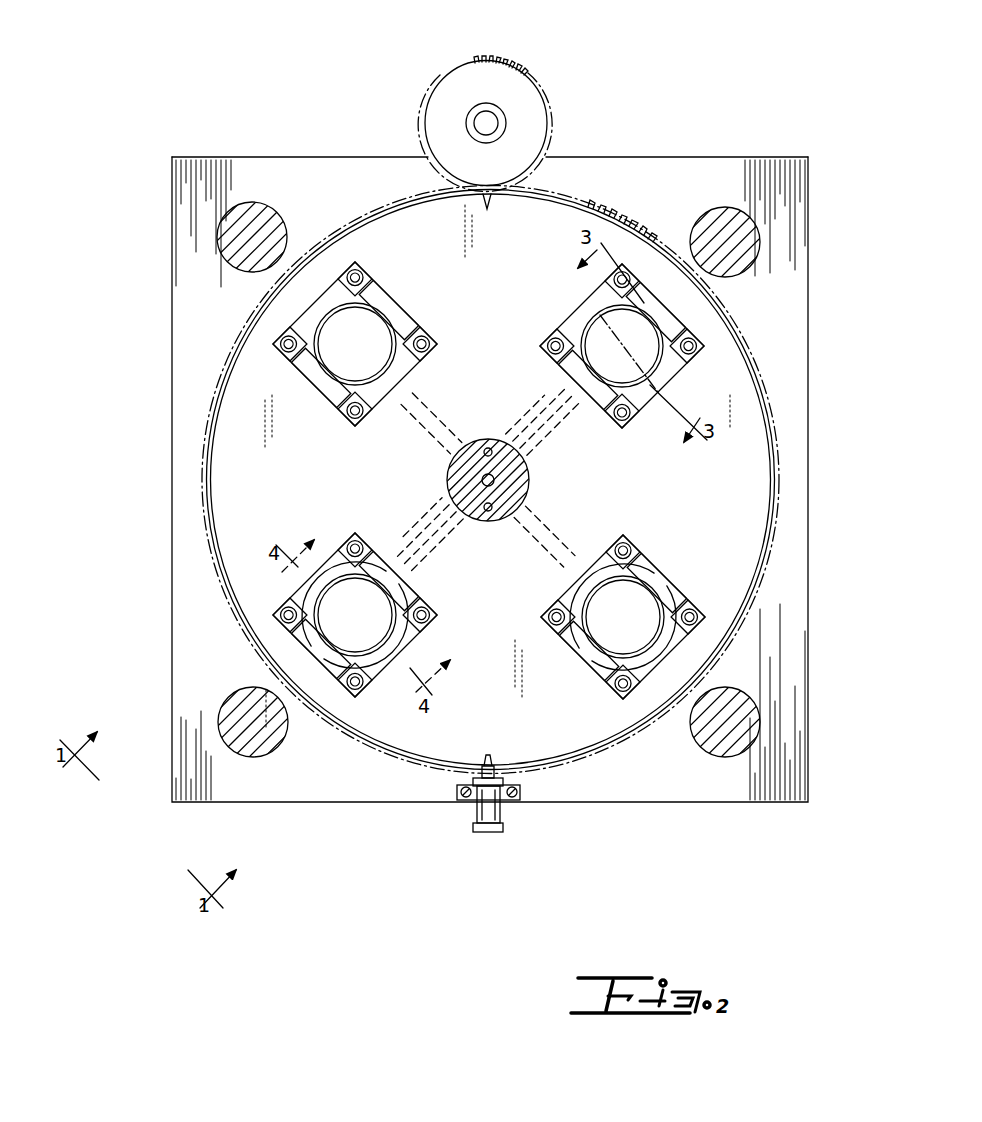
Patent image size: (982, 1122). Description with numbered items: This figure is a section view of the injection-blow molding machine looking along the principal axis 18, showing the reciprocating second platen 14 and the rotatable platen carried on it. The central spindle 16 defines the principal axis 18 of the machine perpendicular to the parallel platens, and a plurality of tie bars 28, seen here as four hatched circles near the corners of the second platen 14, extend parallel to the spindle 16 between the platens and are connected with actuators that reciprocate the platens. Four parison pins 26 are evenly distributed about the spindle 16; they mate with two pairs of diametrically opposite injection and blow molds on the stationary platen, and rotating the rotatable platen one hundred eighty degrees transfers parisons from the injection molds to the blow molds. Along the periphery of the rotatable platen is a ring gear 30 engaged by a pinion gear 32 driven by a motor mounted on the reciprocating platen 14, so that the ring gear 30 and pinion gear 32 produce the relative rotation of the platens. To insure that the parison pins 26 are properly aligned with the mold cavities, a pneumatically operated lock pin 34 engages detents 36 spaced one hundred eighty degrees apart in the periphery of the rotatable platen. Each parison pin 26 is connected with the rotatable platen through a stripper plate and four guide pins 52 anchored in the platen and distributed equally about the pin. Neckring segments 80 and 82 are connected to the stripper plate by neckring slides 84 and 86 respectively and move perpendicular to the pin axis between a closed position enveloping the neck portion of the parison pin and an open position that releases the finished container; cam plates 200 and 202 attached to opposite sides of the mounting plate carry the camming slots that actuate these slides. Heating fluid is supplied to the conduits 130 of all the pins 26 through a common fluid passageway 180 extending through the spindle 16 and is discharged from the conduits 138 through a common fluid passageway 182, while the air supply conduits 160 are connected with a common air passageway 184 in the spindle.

The second platen 14 is at (182, 200).
The central spindle 16 is at (529, 476).
The principal axis 18 is at (495, 470).
The parison pin 26 is at (368, 355).
The tie bar 28 is at (268, 226).
The ring gear 30 is at (250, 322).
The pinion gear 32 is at (444, 90).
The lock pin 34 is at (505, 830).
The detent 36 is at (482, 762).
The guide pin 52 is at (614, 280).
The neckring segment 80 is at (415, 309).
The neckring segment 82 is at (364, 284).
The neckring slide 84 is at (388, 380).
The neckring slide 86 is at (292, 368).
The fluid supply conduit 130 is at (440, 519).
The fluid return conduit 138 is at (446, 487).
The air supply conduit 160 is at (486, 536).
The common fluid passageway 180 is at (478, 455).
The common fluid passageway 182 is at (488, 448).
The common air passageway 184 is at (494, 508).
The cam plate 200 is at (686, 389).
The cam plate 202 is at (562, 318).